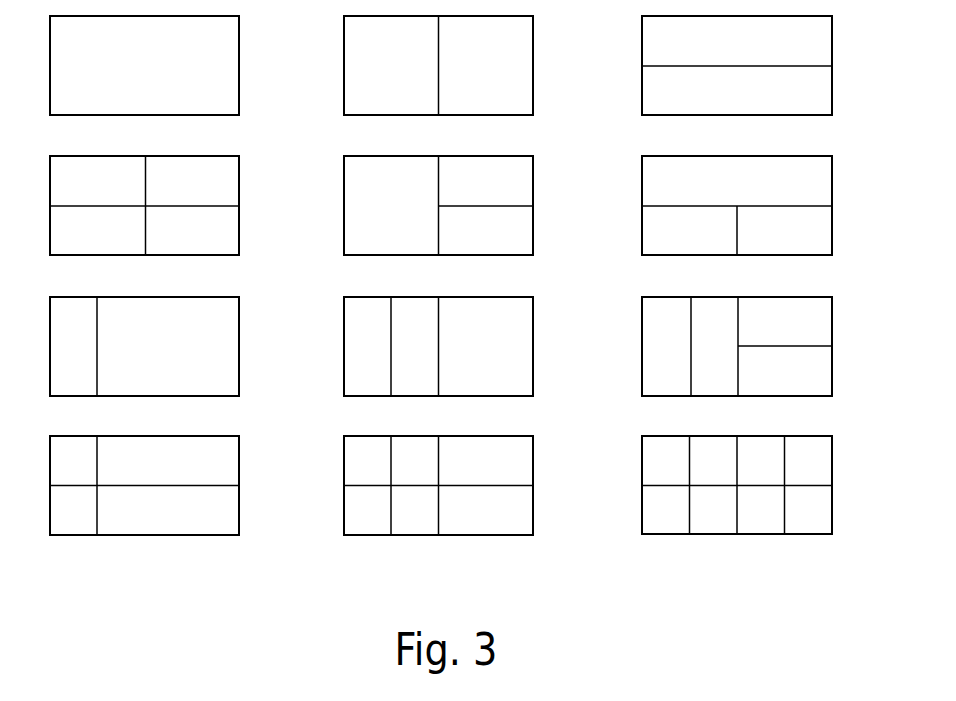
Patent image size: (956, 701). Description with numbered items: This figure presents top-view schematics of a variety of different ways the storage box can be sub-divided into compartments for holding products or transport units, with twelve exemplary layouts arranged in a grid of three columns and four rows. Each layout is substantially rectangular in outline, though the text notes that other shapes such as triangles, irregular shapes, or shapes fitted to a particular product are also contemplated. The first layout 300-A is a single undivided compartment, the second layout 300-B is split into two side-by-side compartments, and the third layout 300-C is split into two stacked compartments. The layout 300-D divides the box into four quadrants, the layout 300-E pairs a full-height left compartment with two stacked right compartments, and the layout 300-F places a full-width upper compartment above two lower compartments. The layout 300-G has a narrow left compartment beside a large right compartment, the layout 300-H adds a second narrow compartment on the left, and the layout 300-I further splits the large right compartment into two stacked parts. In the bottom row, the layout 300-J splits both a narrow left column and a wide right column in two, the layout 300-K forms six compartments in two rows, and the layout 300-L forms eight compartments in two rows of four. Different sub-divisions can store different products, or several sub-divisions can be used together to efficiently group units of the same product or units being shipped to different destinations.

The sub-division layout schematic 300-A is at (144, 79).
The sub-division layout schematic 300-B is at (438, 79).
The sub-division layout schematic 300-C is at (737, 79).
The sub-division layout schematic 300-D is at (144, 219).
The sub-division layout schematic 300-E is at (438, 219).
The sub-division layout schematic 300-F is at (737, 219).
The sub-division layout schematic 300-G is at (144, 361).
The sub-division layout schematic 300-H is at (438, 361).
The sub-division layout schematic 300-I is at (737, 361).
The sub-division layout schematic 300-J is at (144, 500).
The sub-division layout schematic 300-K is at (438, 500).
The sub-division layout schematic 300-L is at (737, 500).